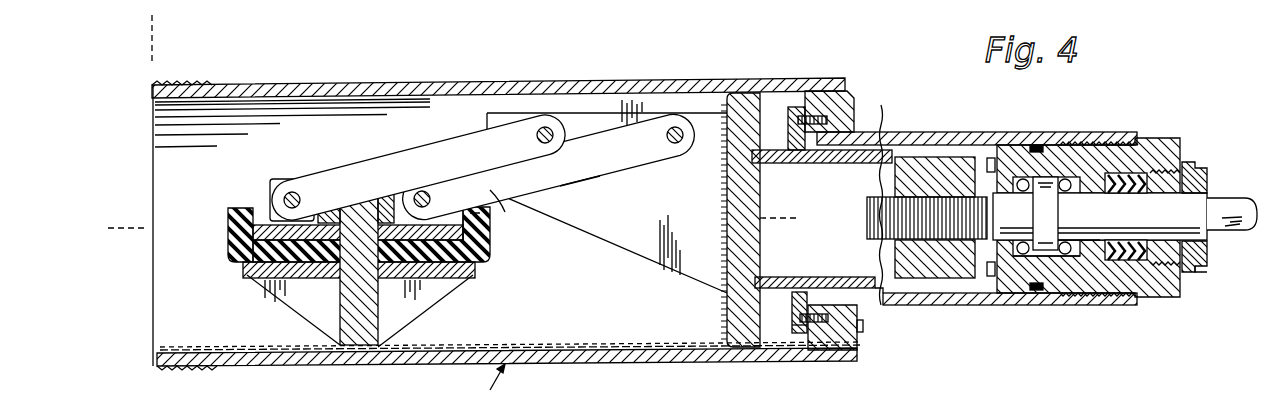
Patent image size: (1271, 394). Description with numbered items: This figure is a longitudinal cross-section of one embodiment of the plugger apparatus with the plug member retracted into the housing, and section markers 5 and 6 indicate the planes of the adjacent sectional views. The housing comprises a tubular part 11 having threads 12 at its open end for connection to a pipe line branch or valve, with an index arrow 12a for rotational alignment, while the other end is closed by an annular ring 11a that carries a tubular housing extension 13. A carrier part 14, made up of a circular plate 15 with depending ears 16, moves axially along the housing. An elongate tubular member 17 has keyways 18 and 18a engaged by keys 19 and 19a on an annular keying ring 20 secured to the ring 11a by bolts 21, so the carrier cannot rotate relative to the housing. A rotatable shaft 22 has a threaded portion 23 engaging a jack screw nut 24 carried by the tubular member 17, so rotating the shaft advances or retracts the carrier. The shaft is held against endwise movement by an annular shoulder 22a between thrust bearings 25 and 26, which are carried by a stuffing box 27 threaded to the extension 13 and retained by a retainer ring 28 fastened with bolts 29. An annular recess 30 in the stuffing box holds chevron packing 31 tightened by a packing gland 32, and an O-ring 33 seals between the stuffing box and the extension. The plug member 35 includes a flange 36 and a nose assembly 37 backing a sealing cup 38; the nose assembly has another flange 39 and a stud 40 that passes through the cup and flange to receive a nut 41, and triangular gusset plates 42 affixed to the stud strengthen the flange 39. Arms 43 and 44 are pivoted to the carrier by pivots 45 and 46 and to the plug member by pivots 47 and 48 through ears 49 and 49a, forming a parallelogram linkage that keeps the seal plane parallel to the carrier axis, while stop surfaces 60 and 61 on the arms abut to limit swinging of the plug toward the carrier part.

The section line 5- 5 is at (127, 232).
The section line 6- 6 is at (144, 38).
The tubular part 11 is at (551, 364).
The annular ring 11a is at (855, 97).
The threads 12 is at (193, 367).
The arrow 12a is at (862, 327).
The tubular housing extension 13 is at (905, 306).
The carrier part 14 is at (625, 242).
The circular plate 15 is at (727, 317).
The flanges or ears 16 is at (668, 276).
The elongate tubular member 17 is at (838, 277).
The keyway 18 is at (928, 306).
The keyway 18a is at (930, 147).
The key 19 is at (800, 292).
The key 19a is at (797, 152).
The annular keying ring 20 is at (800, 336).
The bolts 21 is at (806, 112).
The rotatable shaft 22 is at (1207, 240).
The annular shoulder 22a is at (1052, 252).
The threaded portion 23 is at (868, 218).
The jack screw nut 24 is at (950, 262).
The thrust bearing 25 is at (1062, 256).
The thrust bearing 26 is at (1026, 258).
The stuffing box 27 is at (1184, 274).
The retainer ring 28 is at (1020, 256).
The bolts 29 is at (991, 158).
The annular recess 30 is at (1150, 298).
The packing 31 is at (1115, 262).
The packing gland 32 is at (1200, 270).
The O-ring 33 is at (1037, 292).
The plug member 35 is at (467, 280).
The flange 36 is at (424, 272).
The nose assembly 37 is at (436, 315).
The sealing cup 38 is at (492, 255).
The flange 39 is at (262, 282).
The stud 40 is at (340, 299).
The nut 41 is at (332, 192).
The triangular gusset plates 42 is at (292, 305).
The arm 43 is at (577, 180).
The arm 44 is at (428, 151).
The pivot 45 is at (674, 145).
The pivot 46 is at (554, 139).
The pivot 47 is at (431, 199).
The pivot 48 is at (290, 192).
The ear 49 is at (490, 240).
The ear 49a is at (270, 183).
The stop surface 60 is at (506, 211).
The stop surface 61 is at (480, 166).